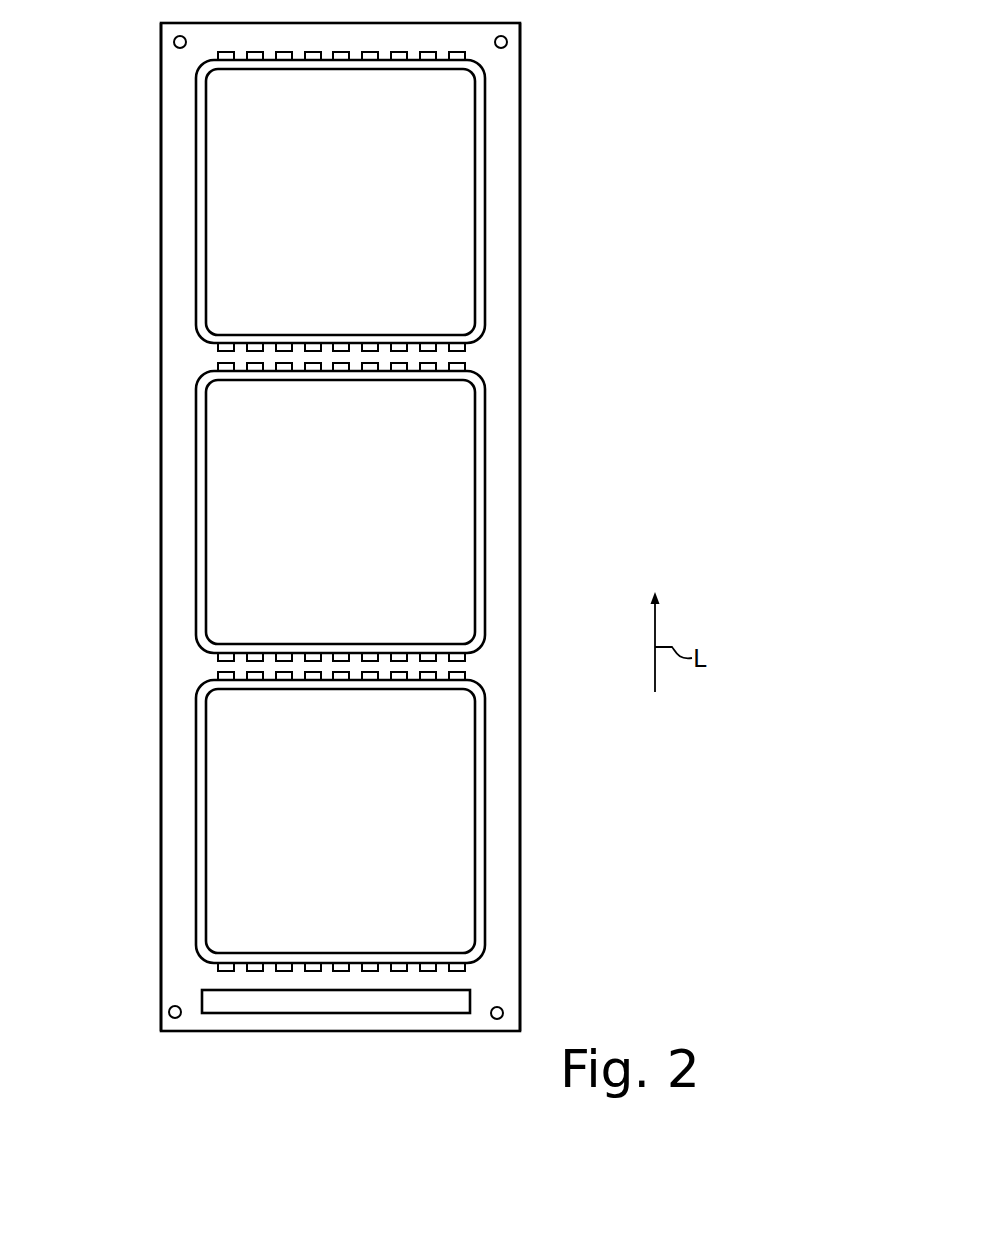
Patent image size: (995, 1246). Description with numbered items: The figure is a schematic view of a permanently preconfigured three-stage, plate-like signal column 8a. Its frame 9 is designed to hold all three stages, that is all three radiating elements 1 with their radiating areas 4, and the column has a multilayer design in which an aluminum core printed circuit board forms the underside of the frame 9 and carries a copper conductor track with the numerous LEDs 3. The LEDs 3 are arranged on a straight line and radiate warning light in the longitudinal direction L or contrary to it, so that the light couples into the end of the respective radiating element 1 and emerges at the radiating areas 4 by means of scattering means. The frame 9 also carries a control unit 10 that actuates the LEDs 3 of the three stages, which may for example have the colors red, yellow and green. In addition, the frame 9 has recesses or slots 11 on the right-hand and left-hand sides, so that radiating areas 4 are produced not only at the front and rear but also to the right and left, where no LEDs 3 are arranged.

The radiating element 1 is at (437, 212).
The LEDs 3 is at (498, 58).
The radiating areas 4 is at (357, 198).
The signal column 8a is at (410, 557).
The frame 9 is at (498, 893).
The control unit 10 is at (404, 1012).
The slots 11 is at (178, 159).